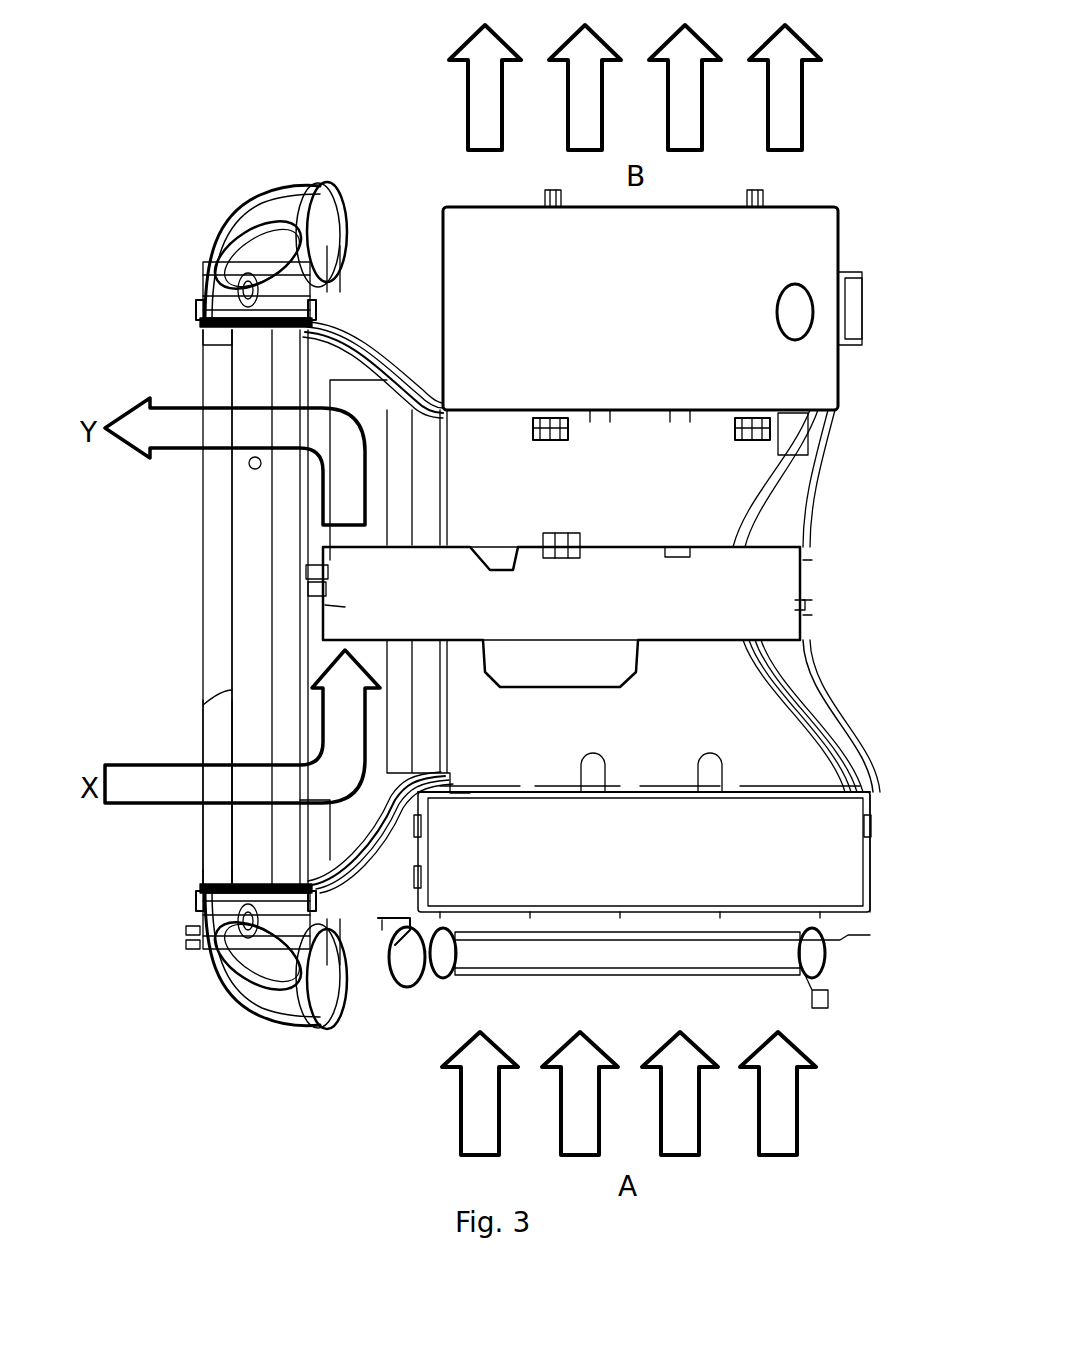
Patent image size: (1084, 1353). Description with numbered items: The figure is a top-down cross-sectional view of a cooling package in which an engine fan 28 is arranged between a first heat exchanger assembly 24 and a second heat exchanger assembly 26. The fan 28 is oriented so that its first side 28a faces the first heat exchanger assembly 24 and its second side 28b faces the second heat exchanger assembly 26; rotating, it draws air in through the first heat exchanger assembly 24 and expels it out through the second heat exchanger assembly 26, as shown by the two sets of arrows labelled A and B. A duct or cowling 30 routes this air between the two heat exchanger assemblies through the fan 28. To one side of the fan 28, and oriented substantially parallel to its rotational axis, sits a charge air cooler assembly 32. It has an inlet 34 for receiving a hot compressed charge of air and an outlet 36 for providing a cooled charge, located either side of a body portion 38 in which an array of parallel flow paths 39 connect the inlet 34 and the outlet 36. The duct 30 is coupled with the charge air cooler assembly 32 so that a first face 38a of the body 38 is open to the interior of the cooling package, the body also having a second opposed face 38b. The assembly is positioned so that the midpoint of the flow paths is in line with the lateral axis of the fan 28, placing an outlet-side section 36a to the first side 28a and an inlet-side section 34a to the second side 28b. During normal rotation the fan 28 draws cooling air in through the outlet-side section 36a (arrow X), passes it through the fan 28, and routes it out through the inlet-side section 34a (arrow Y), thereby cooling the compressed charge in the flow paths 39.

The first heat exchanger assembly 24 is at (752, 847).
The second heat exchanger assembly 26 is at (720, 282).
The engine fan 28 is at (793, 622).
The first side of the fan 28a is at (713, 665).
The second side of the fan 28b is at (713, 525).
The duct or cowling 30 is at (803, 668).
The charge air cooler (CAC) assembly 32 is at (172, 143).
The inlet 34 is at (320, 182).
The inlet-side section of the flow paths 34a is at (195, 345).
The outlet 36 is at (308, 1035).
The outlet-side section of the flow paths 36a is at (172, 870).
The body portion 38 is at (200, 592).
The first face of the body 38a is at (310, 380).
The second opposed face 38b is at (200, 700).
The flow paths 39 is at (235, 540).